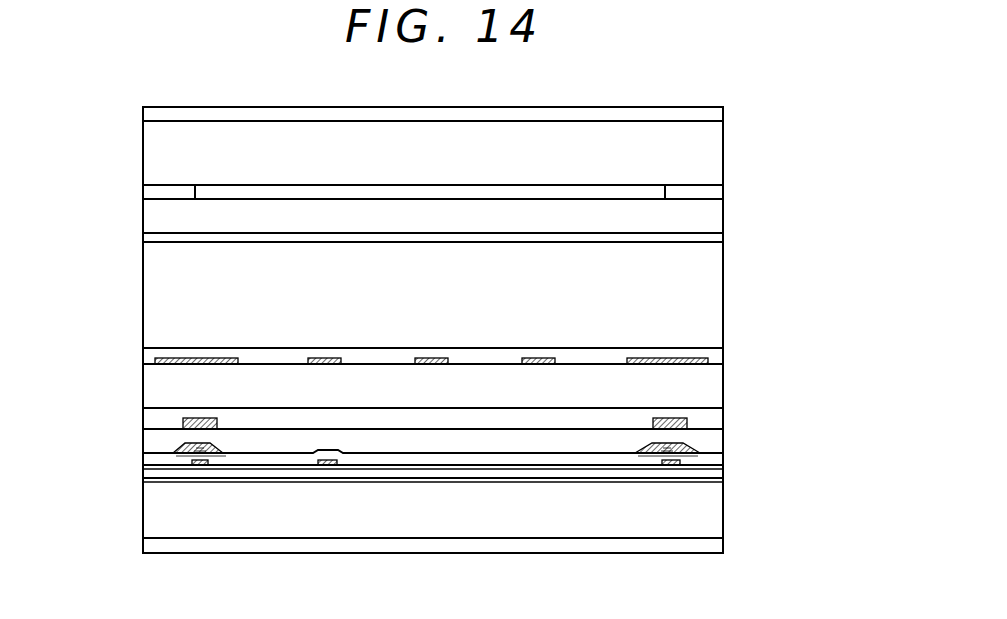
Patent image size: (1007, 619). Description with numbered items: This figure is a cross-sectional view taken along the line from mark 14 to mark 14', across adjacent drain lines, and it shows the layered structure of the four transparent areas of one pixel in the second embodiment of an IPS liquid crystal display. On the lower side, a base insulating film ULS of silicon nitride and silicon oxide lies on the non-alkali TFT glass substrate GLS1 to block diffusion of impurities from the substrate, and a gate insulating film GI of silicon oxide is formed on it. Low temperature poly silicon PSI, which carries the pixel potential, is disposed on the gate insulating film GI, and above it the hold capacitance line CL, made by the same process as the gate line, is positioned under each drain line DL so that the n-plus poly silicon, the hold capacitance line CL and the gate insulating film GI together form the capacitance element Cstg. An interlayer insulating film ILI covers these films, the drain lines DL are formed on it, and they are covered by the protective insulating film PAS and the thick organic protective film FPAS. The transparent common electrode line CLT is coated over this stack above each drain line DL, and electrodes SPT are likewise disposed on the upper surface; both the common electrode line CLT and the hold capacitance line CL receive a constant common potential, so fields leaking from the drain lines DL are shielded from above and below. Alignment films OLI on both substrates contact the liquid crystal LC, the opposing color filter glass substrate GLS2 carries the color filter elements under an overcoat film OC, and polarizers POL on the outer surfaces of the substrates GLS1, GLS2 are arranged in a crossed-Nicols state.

The polarizer POL is at (710, 113).
The color filter glass substrate GLS2 is at (707, 142).
The overcoat film OC is at (710, 212).
The alignment film OLI is at (710, 237).
The liquid crystal LC is at (165, 273).
The transparent common electrode line CLT is at (168, 366).
The pixel electrode / source electrode SPT is at (320, 356).
The organic protective film FPAS is at (715, 382).
The drain line DL is at (183, 423).
The protective insulating film PAS is at (715, 418).
The interlayer insulating film ILI is at (713, 441).
The hold capacitance line CL is at (178, 443).
The gate insulating film GI is at (715, 460).
The base insulating film ULS is at (715, 473).
The TFT glass substrate GLS1 is at (715, 515).
The low temperature poly silicon PSI is at (200, 468).
The capacitance element Cstg is at (188, 462).
The section line 14 is at (115, 330).
The section line 14' is at (760, 330).